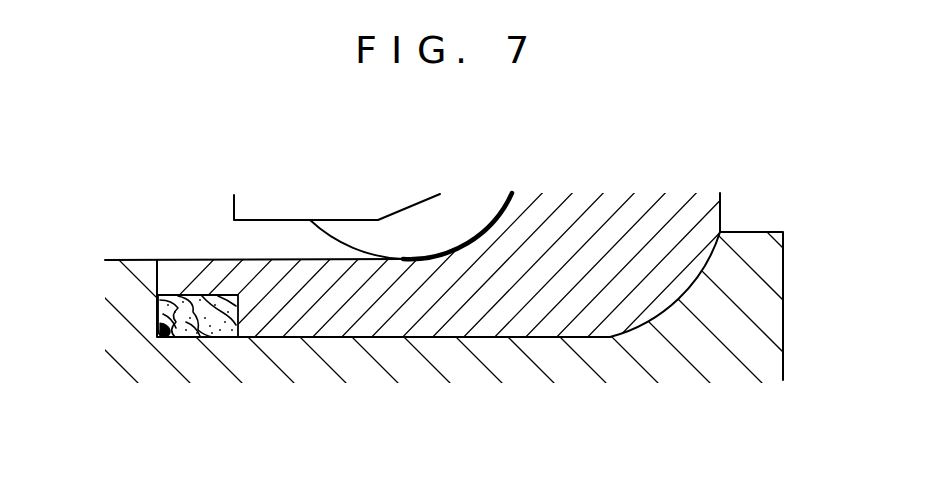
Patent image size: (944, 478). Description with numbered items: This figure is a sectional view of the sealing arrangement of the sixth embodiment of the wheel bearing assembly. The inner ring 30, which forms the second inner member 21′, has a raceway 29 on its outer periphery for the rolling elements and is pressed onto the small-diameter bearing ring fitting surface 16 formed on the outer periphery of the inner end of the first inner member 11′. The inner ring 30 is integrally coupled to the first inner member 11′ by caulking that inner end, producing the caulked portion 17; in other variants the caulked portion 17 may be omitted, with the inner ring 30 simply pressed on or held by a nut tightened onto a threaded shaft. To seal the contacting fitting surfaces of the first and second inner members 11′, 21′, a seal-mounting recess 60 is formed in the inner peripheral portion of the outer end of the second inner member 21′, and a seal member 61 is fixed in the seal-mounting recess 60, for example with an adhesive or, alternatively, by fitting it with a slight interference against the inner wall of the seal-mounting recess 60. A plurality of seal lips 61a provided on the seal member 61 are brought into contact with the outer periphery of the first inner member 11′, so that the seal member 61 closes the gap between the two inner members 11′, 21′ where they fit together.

The first inner member 11′ is at (135, 259).
The second inner member 21′ is at (723, 196).
The caulked portion 17 is at (753, 248).
The raceway 29 is at (432, 258).
The bearing ring fitting surface 16 is at (513, 338).
The inner ring 30 is at (606, 306).
The seal-mounting recess 60 is at (226, 339).
The seal member 61 is at (194, 332).
The seal lips 61a is at (160, 330).